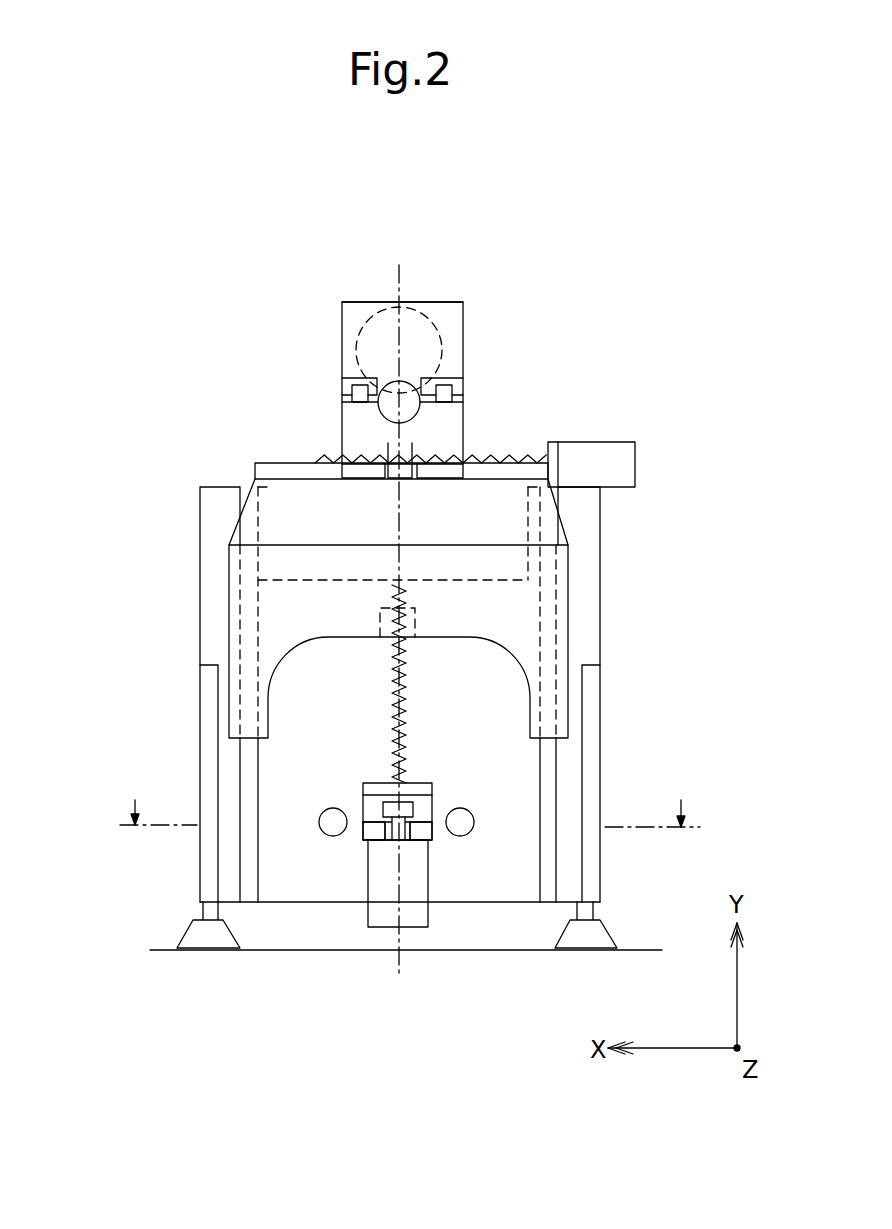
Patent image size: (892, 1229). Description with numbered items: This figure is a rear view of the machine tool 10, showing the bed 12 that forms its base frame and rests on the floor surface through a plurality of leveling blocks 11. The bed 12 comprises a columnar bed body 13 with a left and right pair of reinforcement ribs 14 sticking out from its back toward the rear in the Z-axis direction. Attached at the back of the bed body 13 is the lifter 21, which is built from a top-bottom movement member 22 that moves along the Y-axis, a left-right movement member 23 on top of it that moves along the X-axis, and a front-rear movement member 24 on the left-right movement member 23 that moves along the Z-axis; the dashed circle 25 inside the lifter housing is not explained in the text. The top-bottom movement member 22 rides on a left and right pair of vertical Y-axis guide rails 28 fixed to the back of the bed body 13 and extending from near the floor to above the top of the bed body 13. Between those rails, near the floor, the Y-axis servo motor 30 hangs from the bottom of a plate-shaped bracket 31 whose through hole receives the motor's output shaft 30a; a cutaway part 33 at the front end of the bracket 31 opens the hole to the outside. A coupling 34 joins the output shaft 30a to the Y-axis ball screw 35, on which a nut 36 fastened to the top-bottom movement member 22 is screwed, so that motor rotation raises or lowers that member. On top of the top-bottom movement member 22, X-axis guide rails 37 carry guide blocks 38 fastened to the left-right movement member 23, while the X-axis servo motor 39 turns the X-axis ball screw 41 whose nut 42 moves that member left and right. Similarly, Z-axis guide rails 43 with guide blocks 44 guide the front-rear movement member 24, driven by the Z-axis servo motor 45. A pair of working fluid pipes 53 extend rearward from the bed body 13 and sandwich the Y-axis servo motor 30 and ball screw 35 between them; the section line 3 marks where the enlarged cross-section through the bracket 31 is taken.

The machine tool 10 is at (607, 278).
The leveling blocks 11 is at (185, 940).
The bed 12 is at (200, 520).
The bed body 13 is at (200, 595).
The reinforcement ribs 14 is at (207, 745).
The lifter 21 is at (450, 300).
The top-bottom movement member 22 is at (570, 555).
The left-right movement member 23 is at (342, 422).
The front-rear movement member 24 is at (368, 301).
The motor 25 is at (446, 330).
The Y-axis guide rails 28 is at (240, 858).
The Y-axis servo motor 30 is at (422, 928).
The output shaft 30a is at (378, 832).
The bracket 31 is at (432, 805).
The cutaway part 33 is at (412, 836).
The coupling 34 is at (383, 810).
The Y-axis ball screw 35 is at (392, 720).
The nut 36 is at (415, 622).
The X-axis guide rails 37 is at (256, 463).
The guide blocks 38 is at (335, 490).
The X-axis servo motor 39 is at (626, 441).
The X-axis ball screw 41 is at (540, 458).
The nut 42 is at (392, 480).
The Z-axis guide rails 43 is at (350, 393).
The guide blocks 44 is at (344, 382).
The Z-axis servo motor 45 is at (422, 408).
The pipes 53 is at (319, 822).
The section line 3- 3 is at (410, 799).